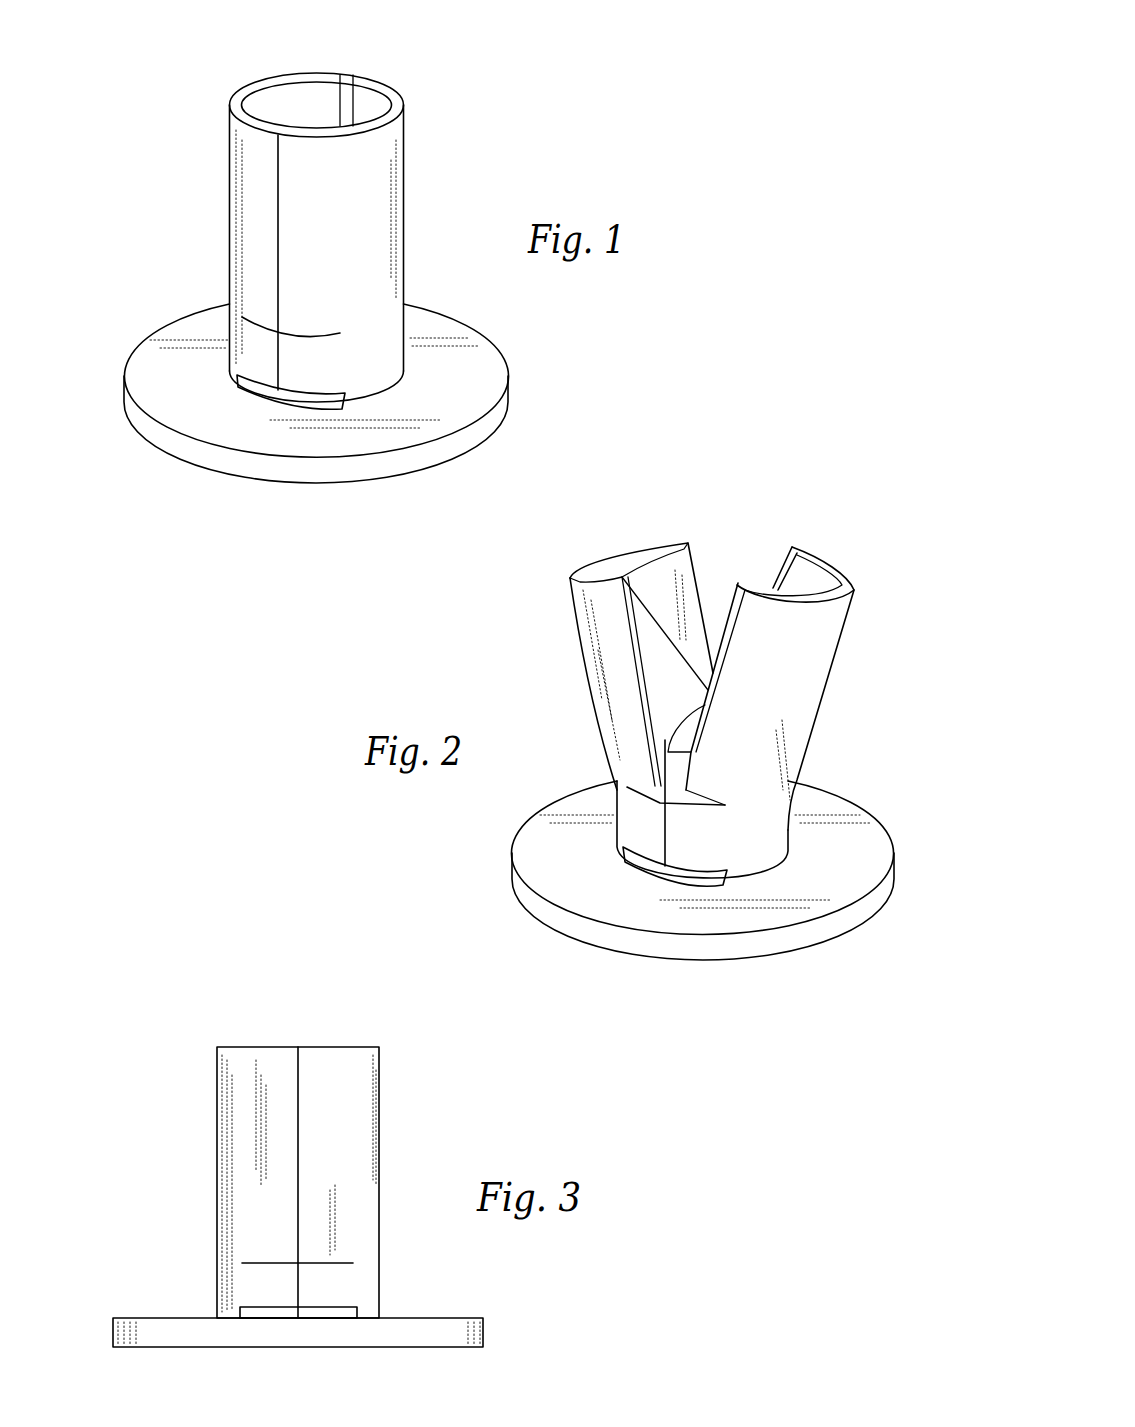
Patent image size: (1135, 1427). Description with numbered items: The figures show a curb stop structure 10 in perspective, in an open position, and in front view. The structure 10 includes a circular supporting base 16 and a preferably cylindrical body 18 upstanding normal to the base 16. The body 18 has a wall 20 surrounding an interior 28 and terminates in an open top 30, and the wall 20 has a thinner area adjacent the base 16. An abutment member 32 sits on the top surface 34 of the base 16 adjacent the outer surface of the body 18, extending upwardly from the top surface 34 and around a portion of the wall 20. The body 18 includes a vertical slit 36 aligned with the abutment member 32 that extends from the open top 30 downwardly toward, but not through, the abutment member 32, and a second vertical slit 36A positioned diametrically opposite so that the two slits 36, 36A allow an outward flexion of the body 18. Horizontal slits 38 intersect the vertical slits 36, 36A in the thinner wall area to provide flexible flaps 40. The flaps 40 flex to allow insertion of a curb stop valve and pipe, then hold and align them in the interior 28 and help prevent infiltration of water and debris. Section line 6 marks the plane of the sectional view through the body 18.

In FIG. 1, the section line 6- 6 is at (320, 73).
In FIG. 1, the curb stop structure 10 is at (430, 108).
In FIG. 2, the curb stop structure 10 is at (880, 532).
In FIG. 3, the curb stop structure 10 is at (403, 1033).
In FIG. 1, the supporting base 16 is at (352, 401).
In FIG. 2, the supporting base 16 is at (728, 875).
In FIG. 3, the supporting base 16 is at (308, 1329).
In FIG. 1, the body 18 is at (276, 218).
In FIG. 2, the body 18 is at (681, 729).
In FIG. 3, the body 18 is at (307, 1155).
In FIG. 2, the wall 20 is at (628, 643).
In FIG. 2, the interior 28 is at (721, 592).
In FIG. 1, the open top 30 is at (302, 74).
In FIG. 3, the open top 30 is at (270, 1046).
In FIG. 1, the abutment member 32 is at (230, 349).
In FIG. 2, the abutment member 32 is at (672, 877).
In FIG. 3, the abutment member 32 is at (260, 1305).
In FIG. 1, the top surface 34 is at (444, 416).
In FIG. 2, the top surface 34 is at (836, 890).
In FIG. 3, the top surface 34 is at (137, 1308).
In FIG. 1, the vertical slit 36 is at (276, 240).
In FIG. 2, the vertical slit 36 is at (650, 700).
In FIG. 3, the vertical slit 36 is at (298, 1127).
In FIG. 1, the second vertical slit 36A is at (350, 76).
In FIG. 2, the second vertical slit 36A is at (700, 574).
In FIG. 1, the horizontal slit 38 is at (261, 322).
In FIG. 2, the horizontal slit 38 is at (653, 780).
In FIG. 3, the horizontal slit 38 is at (343, 1258).
In FIG. 2, the flexible flap 40 is at (688, 786).